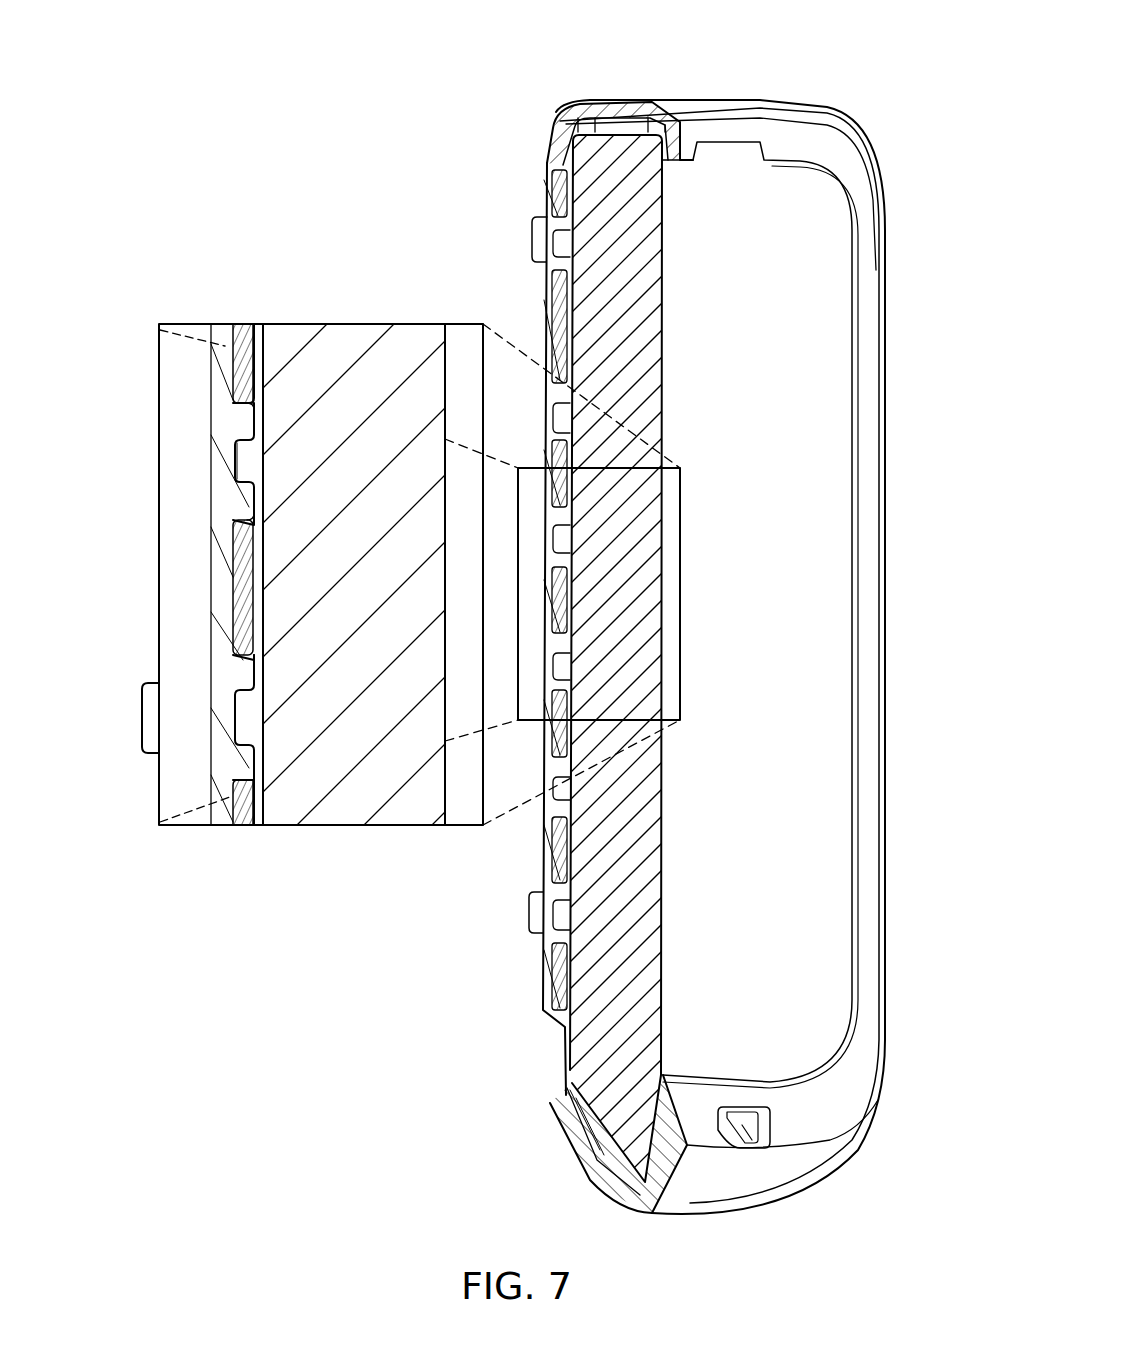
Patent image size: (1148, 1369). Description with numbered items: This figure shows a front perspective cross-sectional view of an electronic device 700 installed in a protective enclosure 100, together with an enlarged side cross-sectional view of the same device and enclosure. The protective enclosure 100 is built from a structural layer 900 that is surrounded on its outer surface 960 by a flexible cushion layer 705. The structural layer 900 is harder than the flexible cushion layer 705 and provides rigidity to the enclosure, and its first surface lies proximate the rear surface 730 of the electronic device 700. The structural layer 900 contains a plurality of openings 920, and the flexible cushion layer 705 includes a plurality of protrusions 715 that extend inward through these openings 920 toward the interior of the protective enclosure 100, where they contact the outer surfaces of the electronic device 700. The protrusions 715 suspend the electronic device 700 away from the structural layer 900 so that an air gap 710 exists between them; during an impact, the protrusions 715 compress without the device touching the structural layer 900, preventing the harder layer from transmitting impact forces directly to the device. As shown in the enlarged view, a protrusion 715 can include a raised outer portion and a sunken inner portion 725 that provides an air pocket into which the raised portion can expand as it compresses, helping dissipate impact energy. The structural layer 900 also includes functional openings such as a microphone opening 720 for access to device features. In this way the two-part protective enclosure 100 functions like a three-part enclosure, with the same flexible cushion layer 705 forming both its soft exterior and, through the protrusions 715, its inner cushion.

The protective enclosure 100 is at (845, 72).
The electronic device 700 is at (612, 178).
The flexible cushion layer 705 is at (610, 1175).
The air gap 710 is at (262, 340).
The protrusions 715 is at (255, 432).
The microphone opening 720 is at (740, 1125).
The sunken inner portion 725 is at (245, 465).
The rear surface 730 is at (562, 1057).
The structural layer 900 is at (560, 838).
The openings 920 is at (531, 240).
The outer surface 960 is at (230, 797).